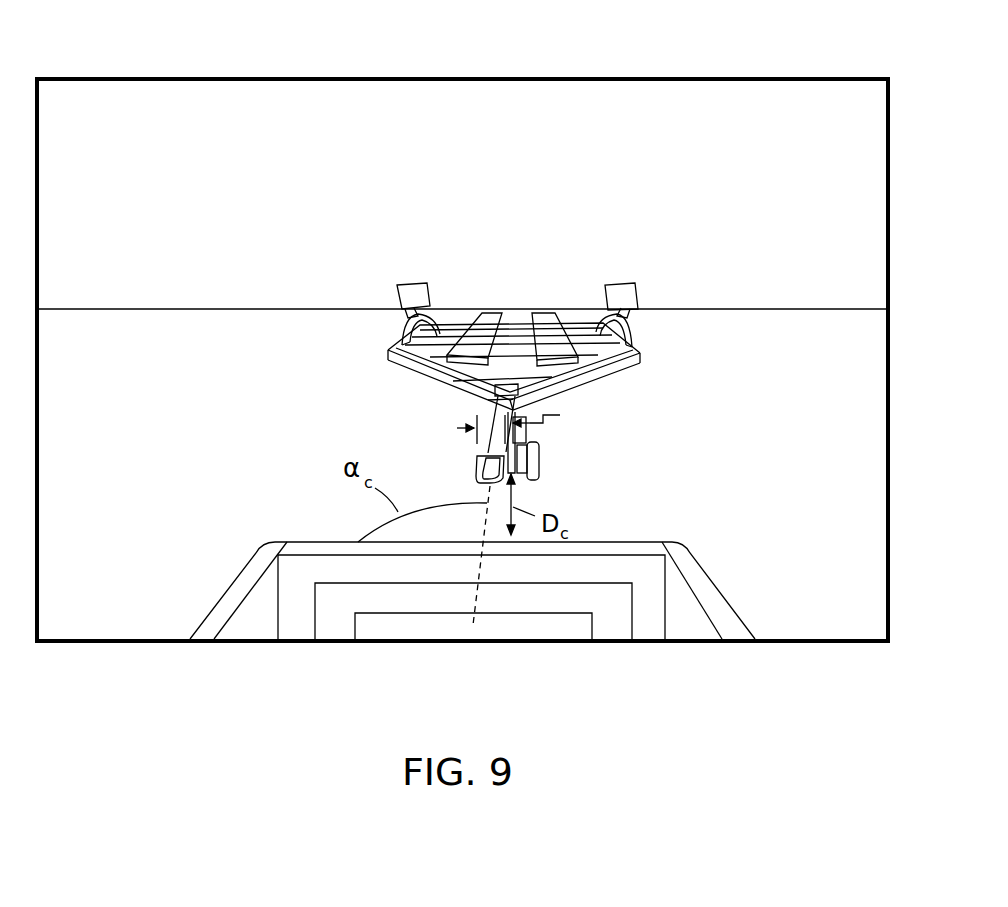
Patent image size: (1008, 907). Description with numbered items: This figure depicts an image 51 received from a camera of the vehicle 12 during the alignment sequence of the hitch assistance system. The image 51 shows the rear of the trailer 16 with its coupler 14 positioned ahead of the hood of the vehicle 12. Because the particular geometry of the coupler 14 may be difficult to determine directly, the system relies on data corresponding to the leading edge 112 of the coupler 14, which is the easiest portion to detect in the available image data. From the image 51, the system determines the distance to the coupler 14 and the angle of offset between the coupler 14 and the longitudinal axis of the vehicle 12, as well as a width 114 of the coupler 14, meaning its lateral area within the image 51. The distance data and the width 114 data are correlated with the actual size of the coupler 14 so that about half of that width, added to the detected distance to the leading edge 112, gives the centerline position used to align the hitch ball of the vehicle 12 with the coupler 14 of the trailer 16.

The image 51 is at (768, 78).
The vehicle 12 is at (762, 576).
The trailer 16 is at (545, 367).
The coupler 14 is at (487, 455).
The leading edge 112 is at (487, 467).
The width 114 is at (525, 429).